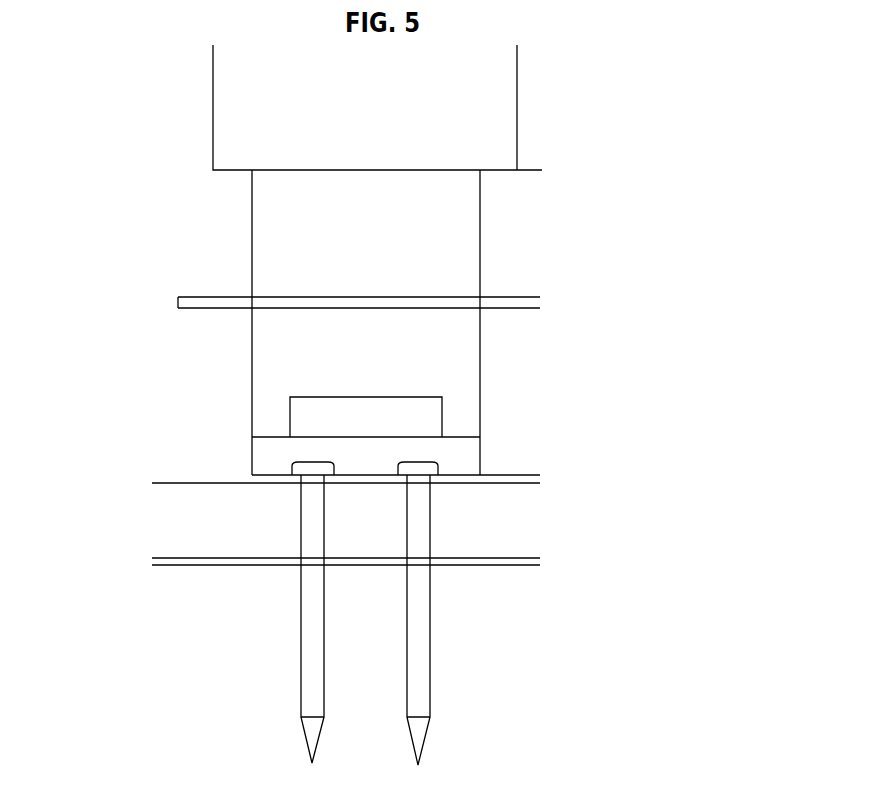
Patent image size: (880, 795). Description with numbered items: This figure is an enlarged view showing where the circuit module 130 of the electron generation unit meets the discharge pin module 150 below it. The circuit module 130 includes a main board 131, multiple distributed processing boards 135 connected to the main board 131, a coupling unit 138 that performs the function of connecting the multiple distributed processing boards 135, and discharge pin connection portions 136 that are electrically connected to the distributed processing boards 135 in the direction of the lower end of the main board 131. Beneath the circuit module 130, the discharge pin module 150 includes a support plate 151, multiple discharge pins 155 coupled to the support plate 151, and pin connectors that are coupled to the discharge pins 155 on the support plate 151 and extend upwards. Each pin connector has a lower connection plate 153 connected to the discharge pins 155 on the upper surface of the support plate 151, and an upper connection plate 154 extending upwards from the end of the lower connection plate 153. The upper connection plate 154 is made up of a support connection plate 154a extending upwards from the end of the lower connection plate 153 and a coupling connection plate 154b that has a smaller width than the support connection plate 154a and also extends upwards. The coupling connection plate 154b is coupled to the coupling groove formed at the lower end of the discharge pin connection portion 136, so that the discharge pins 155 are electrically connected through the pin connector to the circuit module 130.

The circuit module 130 is at (385, 405).
The coupling unit 138 is at (205, 73).
The distributed processing boards 135 is at (258, 212).
The main board 131 is at (182, 312).
The discharge pin connection portions 136 is at (262, 367).
The upper connection plate 154 is at (489, 351).
The coupling connection plate 154b is at (405, 412).
The support connection plate 154a is at (467, 452).
The lower connection plate 153 is at (480, 475).
The discharge pin module 150 is at (475, 495).
The support plate 151 is at (530, 559).
The discharge pins 155 is at (430, 657).